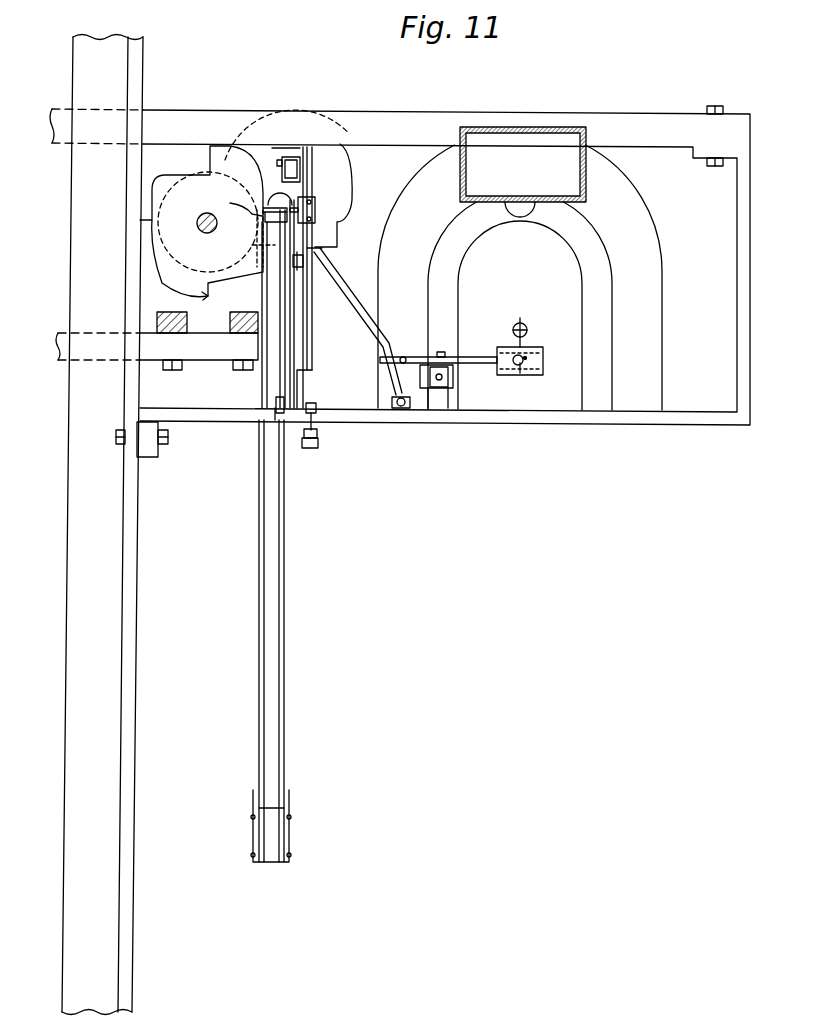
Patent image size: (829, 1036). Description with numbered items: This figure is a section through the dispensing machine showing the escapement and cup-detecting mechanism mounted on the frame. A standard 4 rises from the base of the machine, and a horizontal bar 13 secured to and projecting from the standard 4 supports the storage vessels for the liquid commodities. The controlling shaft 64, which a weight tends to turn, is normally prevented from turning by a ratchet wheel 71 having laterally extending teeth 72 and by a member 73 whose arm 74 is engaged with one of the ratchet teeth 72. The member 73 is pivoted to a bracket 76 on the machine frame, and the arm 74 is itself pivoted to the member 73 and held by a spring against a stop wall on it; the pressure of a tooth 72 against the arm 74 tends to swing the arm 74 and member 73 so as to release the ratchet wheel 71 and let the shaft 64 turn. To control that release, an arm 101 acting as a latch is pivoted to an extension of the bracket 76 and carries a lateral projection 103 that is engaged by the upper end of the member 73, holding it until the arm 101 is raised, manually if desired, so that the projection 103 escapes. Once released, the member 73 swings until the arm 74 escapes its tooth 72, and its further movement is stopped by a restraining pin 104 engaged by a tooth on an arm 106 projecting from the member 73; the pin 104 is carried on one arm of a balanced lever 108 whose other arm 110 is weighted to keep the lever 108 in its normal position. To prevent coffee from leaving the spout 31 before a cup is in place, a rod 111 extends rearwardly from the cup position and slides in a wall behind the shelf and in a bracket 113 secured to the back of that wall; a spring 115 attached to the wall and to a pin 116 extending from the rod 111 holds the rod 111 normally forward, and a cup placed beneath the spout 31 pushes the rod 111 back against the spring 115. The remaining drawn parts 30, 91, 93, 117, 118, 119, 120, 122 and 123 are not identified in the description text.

The standard 4 is at (110, 707).
The horizontal bar 13 is at (640, 122).
The box housing 30 is at (588, 185).
The spout 31 is at (535, 208).
The controlling shaft 64 is at (202, 229).
The ratchet wheel 71 is at (187, 183).
The ratchet teeth 72 is at (150, 209).
The member 73 is at (287, 582).
The arm 74 is at (233, 200).
The bracket 76 is at (313, 233).
The bar 91 is at (305, 319).
The lower bar 93 is at (306, 383).
The arm 101 is at (300, 212).
The lateral projection 103 is at (293, 196).
The restraining pin 104 is at (276, 404).
The arm 106 is at (270, 421).
The balanced lever 108 is at (317, 410).
The arm 110 is at (319, 440).
The rod 111 is at (521, 374).
The bracket 113 is at (544, 366).
The spring 115 is at (527, 328).
The pin 116 is at (478, 357).
The foot 117 is at (465, 365).
The nut 118 is at (438, 354).
The block 119 is at (441, 390).
The pivot 120 is at (403, 356).
The link 122 is at (366, 323).
The bracket 123 is at (304, 259).